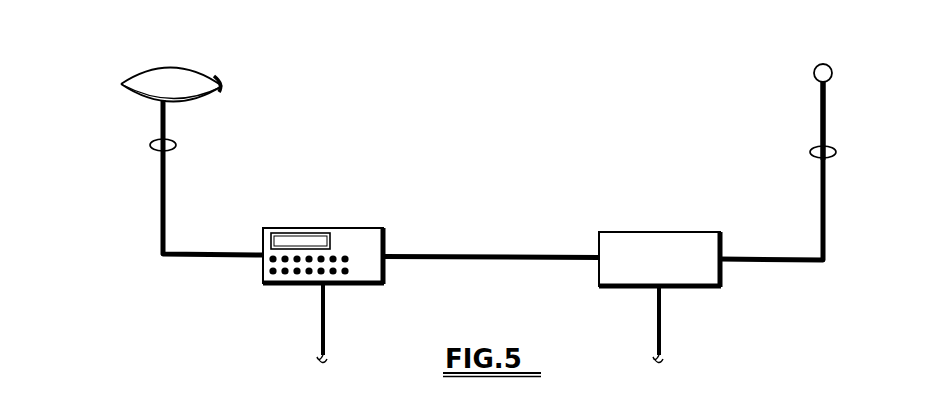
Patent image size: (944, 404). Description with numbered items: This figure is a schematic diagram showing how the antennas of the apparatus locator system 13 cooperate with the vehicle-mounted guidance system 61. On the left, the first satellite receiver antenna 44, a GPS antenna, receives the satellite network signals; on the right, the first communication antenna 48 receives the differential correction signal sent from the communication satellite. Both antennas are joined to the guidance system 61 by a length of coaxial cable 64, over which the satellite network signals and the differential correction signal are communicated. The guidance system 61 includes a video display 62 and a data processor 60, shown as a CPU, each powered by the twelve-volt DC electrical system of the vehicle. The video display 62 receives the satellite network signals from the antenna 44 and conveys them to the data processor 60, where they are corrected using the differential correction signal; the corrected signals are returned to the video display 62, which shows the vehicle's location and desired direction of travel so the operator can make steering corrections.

The apparatus locator system 13 is at (236, 78).
The first satellite receiver antenna 44 is at (143, 85).
The first communication antenna 48 is at (826, 94).
The data processor 60 is at (662, 232).
The guidance system 61 is at (405, 293).
The video display 62 is at (300, 284).
The coaxial cable 64 is at (160, 222).